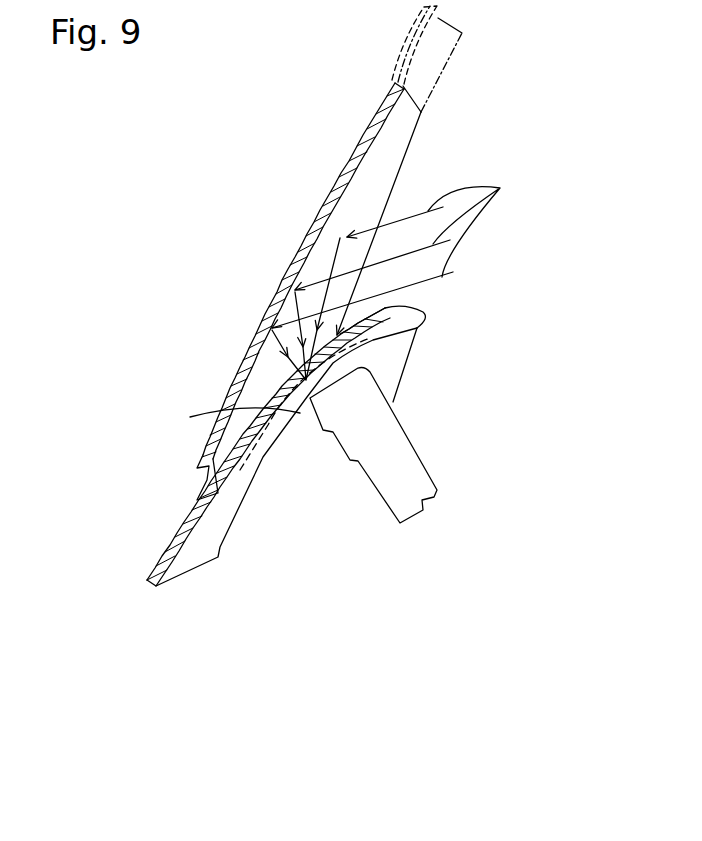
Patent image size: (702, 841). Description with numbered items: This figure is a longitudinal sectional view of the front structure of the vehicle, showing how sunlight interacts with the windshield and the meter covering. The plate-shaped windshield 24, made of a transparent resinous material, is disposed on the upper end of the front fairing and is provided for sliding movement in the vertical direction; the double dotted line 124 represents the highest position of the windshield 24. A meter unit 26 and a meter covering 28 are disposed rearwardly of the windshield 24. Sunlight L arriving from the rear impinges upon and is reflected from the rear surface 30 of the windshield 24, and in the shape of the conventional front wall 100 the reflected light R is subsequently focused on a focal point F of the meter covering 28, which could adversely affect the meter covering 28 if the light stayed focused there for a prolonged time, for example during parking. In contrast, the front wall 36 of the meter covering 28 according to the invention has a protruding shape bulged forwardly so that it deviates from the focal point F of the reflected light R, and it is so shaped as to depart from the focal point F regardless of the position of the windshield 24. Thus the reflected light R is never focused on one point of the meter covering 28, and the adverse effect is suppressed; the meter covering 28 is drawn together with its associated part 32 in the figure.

The windshield 24 is at (343, 153).
The double dotted line 124 is at (410, 38).
The rear surface 30 is at (395, 137).
The sunlight L is at (395, 249).
The reflected light R is at (265, 350).
The front wall 36 is at (362, 318).
The holder member 32 is at (360, 446).
The meter covering 28 is at (413, 373).
The meter unit 26 is at (407, 470).
The conventional front wall 100 is at (197, 418).
The focal point F is at (303, 393).